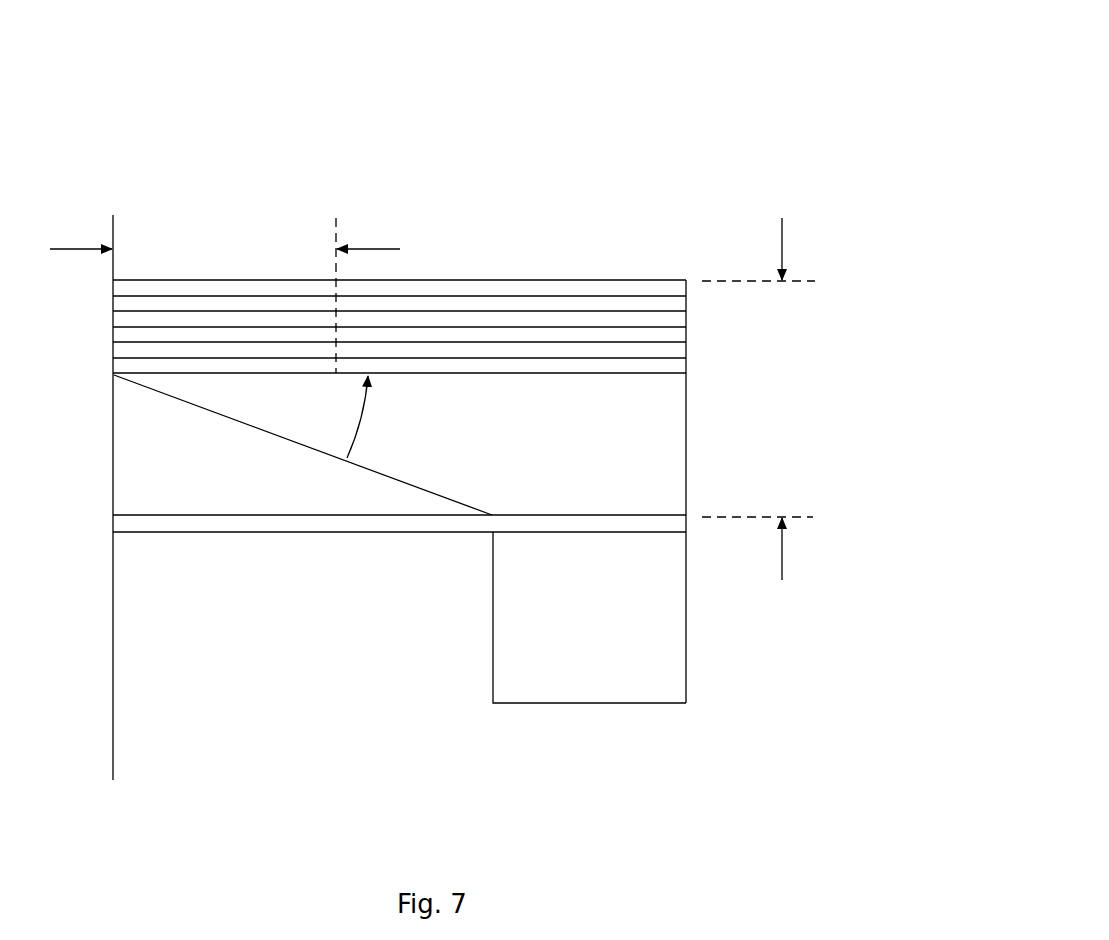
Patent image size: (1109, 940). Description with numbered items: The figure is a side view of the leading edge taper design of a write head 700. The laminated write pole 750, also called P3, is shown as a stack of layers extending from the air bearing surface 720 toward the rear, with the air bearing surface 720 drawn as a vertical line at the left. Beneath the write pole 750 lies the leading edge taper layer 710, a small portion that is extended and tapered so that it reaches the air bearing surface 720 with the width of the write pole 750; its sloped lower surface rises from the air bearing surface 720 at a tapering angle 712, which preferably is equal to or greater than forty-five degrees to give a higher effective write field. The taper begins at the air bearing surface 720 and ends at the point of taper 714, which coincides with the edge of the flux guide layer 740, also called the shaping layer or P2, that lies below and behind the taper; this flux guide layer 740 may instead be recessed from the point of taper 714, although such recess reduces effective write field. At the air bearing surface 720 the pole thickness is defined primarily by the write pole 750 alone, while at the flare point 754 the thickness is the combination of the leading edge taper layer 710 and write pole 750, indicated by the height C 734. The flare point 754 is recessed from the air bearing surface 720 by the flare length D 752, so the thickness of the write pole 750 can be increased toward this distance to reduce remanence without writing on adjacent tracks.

The write head 700 is at (607, 120).
The leading edge taper layer 710 is at (295, 440).
The tapering angle θ 712 is at (367, 418).
The point of taper 714 is at (490, 518).
The ABS 720 is at (98, 840).
The height C 734 is at (812, 390).
The shaping layer / flux guide layer P2 740 is at (620, 655).
The write pole 750 is at (510, 280).
The flare length D 752 is at (240, 230).
The flare point 754 is at (338, 238).